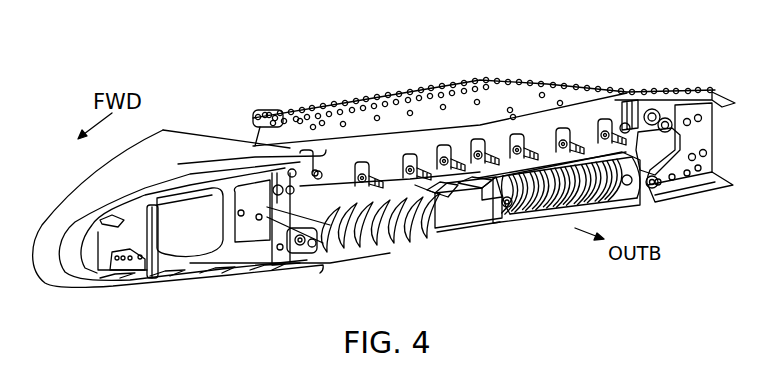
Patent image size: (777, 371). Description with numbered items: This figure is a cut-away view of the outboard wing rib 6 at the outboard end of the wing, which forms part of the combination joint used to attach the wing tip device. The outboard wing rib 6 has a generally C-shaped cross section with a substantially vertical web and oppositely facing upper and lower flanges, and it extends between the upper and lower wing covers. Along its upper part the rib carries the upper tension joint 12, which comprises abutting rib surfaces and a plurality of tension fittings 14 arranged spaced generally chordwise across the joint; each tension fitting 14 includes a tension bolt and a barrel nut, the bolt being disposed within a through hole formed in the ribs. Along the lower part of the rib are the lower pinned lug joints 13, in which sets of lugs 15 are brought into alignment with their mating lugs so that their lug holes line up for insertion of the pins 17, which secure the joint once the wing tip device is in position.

The outboard wing rib 6 is at (553, 117).
The upper tension joint 12 is at (460, 135).
The lower pinned lug joint 13 is at (463, 236).
The tension fitting 14 is at (452, 153).
The lugs 15 is at (423, 248).
The pins 17 is at (333, 260).